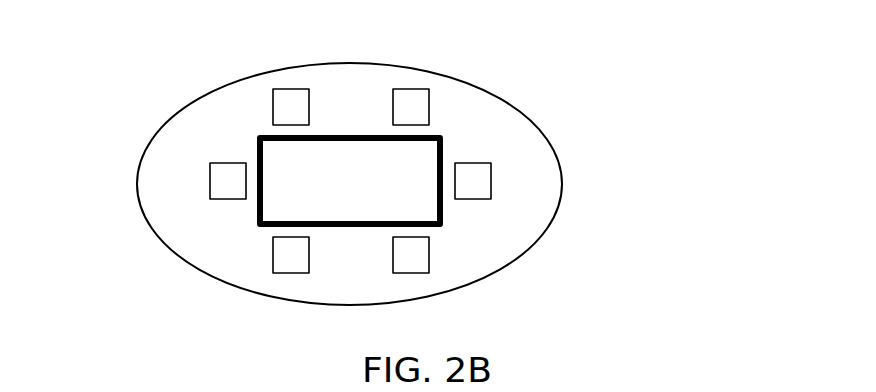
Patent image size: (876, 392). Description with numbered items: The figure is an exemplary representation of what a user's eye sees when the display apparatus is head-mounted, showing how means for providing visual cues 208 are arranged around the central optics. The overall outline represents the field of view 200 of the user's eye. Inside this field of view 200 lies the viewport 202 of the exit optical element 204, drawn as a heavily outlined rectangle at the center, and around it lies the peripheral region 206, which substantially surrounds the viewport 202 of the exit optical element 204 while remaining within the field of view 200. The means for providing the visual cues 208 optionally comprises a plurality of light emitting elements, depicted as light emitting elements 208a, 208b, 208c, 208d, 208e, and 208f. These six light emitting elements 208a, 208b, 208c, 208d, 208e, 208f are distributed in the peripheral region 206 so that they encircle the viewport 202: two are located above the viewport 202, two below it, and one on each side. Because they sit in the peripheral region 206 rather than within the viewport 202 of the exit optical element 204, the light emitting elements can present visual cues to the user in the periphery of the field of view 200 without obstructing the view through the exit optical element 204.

The field of view 200 is at (429, 178).
The viewport 202 is at (498, 155).
The exit optical element 204 is at (350, 181).
The peripheral region 206 is at (491, 184).
The means for providing visual cues 208 is at (127, 97).
The light emitting element 208a is at (293, 69).
The light emitting element 208b is at (502, 69).
The light emitting element 208c is at (614, 164).
The light emitting element 208d is at (551, 274).
The light emitting element 208e is at (198, 284).
The light emitting element 208f is at (210, 180).